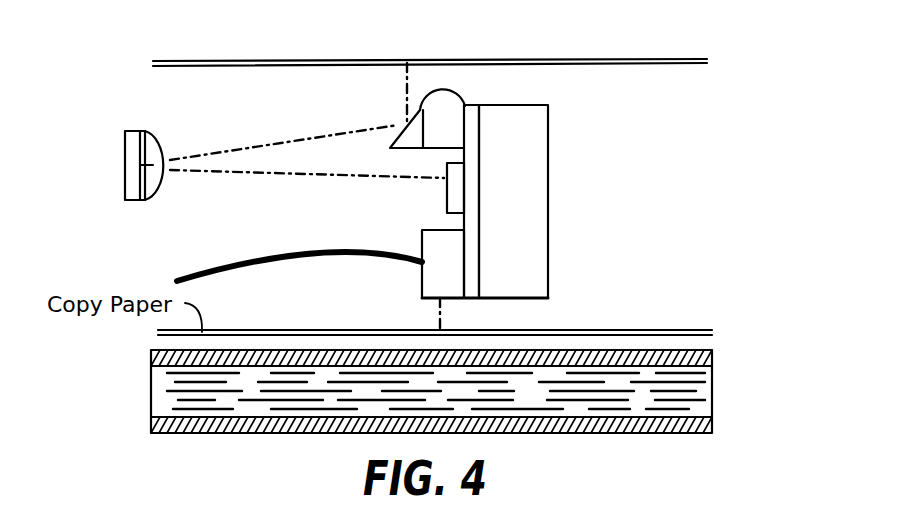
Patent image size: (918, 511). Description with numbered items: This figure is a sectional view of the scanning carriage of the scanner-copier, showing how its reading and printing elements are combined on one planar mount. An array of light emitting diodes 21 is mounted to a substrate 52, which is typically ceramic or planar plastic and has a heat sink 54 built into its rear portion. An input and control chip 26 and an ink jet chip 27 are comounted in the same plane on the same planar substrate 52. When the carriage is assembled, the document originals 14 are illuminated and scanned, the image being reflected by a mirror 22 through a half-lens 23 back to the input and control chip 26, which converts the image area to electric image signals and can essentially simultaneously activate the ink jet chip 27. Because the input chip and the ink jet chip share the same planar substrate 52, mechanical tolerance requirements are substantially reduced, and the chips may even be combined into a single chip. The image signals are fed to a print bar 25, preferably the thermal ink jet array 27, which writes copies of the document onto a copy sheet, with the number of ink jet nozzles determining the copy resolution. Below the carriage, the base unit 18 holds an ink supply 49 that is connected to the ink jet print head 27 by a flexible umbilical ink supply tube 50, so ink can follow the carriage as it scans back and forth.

The document originals 14 is at (298, 61).
The array of light emitting diodes 21 is at (443, 93).
The mirror 22 is at (391, 141).
The half-lens 23 is at (155, 200).
The print bar 25 is at (448, 275).
The input and control chip 26 is at (447, 210).
The ink jet chip 27 is at (422, 301).
The ink supply 49 is at (693, 378).
The flexible umbilical ink supply tube 50 is at (279, 248).
The substrate 52 is at (480, 184).
The heat sink 54 is at (550, 223).
The base unit 18 is at (712, 350).